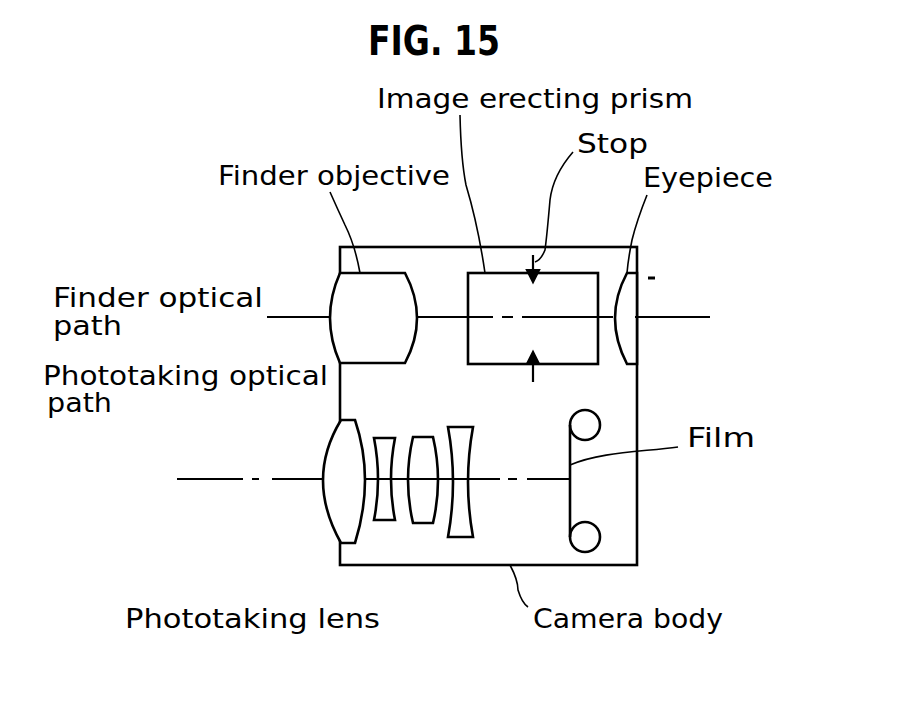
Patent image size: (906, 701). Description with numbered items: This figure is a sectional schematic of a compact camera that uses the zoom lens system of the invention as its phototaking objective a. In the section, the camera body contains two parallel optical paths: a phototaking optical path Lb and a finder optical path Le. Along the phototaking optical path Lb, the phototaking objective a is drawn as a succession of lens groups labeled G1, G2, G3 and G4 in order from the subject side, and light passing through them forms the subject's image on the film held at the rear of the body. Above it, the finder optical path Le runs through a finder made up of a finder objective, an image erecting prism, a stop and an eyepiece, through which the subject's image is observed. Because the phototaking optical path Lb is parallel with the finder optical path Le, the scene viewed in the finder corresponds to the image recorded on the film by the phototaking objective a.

The first lens group of phototaking lens G1 is at (345, 466).
The second lens group of phototaking lens G2 is at (381, 465).
The third lens group of phototaking lens G3 is at (422, 467).
The fourth lens group of phototaking lens G4 is at (458, 469).
The finder optical path Le is at (677, 315).
The phototaking optical path Lb is at (218, 479).
The phototaking objective a is at (398, 511).